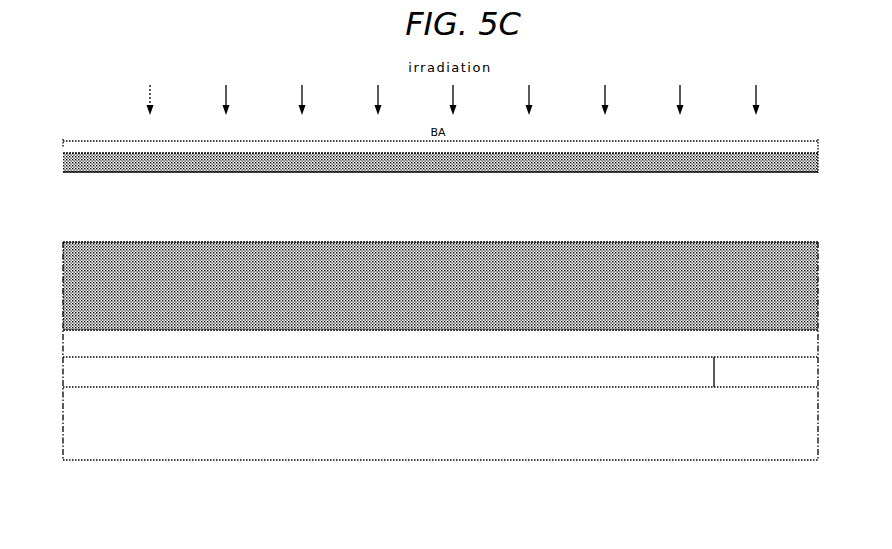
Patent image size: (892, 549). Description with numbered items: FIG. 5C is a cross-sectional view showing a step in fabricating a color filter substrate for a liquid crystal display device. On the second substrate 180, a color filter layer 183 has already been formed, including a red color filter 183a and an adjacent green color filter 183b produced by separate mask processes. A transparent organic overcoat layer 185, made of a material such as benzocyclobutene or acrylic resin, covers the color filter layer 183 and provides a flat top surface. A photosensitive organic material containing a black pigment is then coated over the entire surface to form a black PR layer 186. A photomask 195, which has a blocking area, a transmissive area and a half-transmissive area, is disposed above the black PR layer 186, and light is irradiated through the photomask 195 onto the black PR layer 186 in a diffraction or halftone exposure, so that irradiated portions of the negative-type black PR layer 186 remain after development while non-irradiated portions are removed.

The photomask 195 is at (806, 124).
The black PR layer 186 is at (435, 262).
The overcoat layer 185 is at (285, 347).
The color filter layer 183 is at (585, 442).
The red color filter 183a is at (578, 371).
The green color filter 183b is at (737, 373).
The second substrate 180 is at (440, 351).